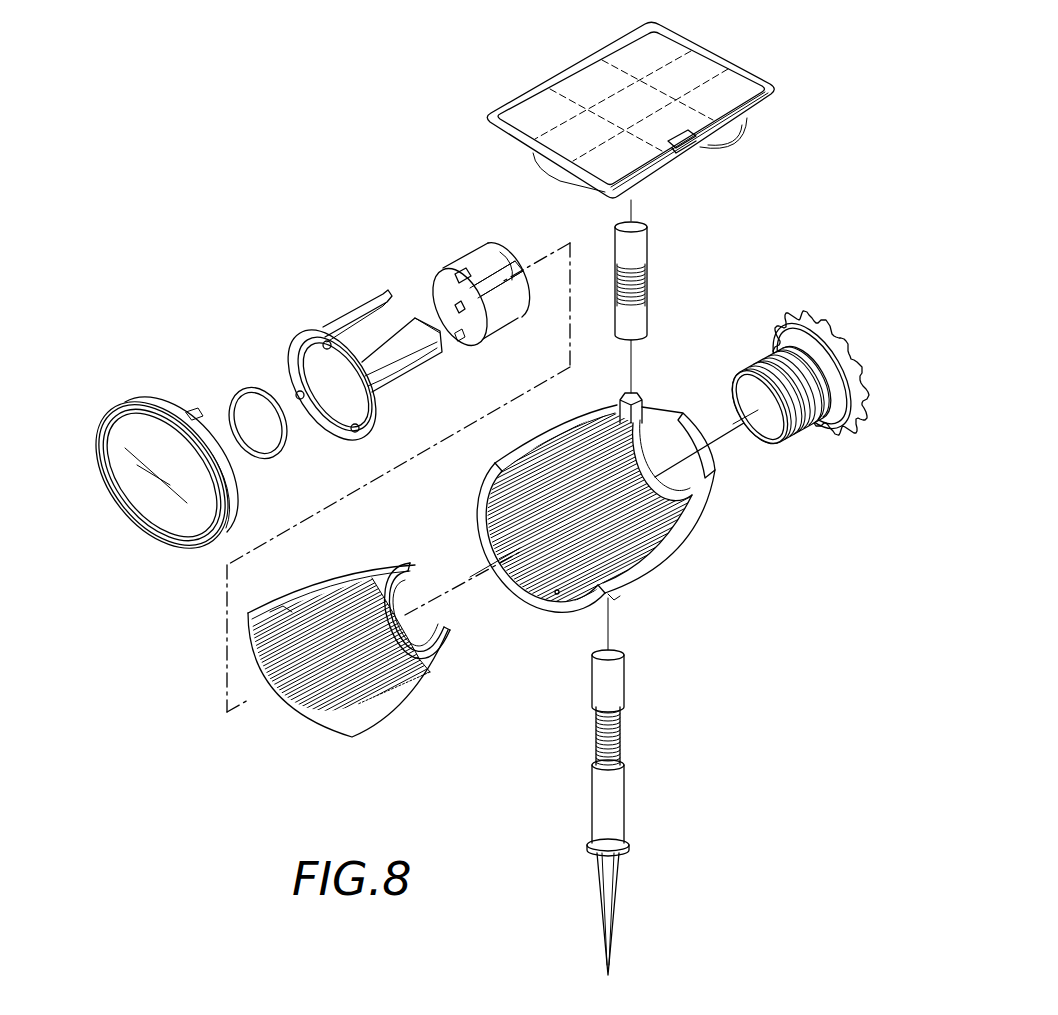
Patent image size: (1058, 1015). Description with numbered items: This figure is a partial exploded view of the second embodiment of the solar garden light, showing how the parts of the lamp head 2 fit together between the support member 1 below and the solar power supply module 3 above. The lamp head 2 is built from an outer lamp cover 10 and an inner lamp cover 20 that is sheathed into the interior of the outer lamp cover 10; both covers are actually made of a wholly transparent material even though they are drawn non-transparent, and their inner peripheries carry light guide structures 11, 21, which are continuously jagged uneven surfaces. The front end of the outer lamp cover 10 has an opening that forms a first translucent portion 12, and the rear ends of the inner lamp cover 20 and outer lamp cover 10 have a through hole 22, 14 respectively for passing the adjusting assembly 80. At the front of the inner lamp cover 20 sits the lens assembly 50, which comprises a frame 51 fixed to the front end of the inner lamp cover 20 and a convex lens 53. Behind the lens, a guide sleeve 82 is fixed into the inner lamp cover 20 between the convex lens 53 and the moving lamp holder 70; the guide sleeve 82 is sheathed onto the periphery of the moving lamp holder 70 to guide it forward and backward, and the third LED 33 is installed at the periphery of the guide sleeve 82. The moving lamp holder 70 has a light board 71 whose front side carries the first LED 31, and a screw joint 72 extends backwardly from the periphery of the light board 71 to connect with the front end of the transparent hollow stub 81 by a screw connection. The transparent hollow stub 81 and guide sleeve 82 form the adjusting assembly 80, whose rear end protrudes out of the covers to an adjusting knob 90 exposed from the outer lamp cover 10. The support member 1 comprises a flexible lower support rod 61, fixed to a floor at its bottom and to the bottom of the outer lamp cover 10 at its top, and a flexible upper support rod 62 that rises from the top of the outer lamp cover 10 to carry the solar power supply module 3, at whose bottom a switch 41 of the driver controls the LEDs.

The support member 1 is at (644, 812).
The lamp head 2 is at (479, 577).
The solar power supply module 3 is at (634, 114).
The outer lamp cover 10 is at (573, 511).
The light guide structure 11 is at (518, 556).
The first translucent portion 12 is at (483, 484).
The through hole 14 is at (660, 468).
The inner lamp cover 20 is at (340, 664).
The light guide structure 21 is at (310, 720).
The through hole 22 is at (410, 630).
The first LED 31 is at (458, 316).
The third LED 33 is at (385, 296).
The switch 41 is at (697, 152).
The lens assembly 50 is at (162, 471).
The frame 51 is at (200, 558).
The convex lens 53 is at (238, 385).
The flexible lower support rod 61 is at (625, 727).
The flexible upper support rod 62 is at (652, 283).
The moving lamp holder 70 is at (457, 289).
The light board 71 is at (437, 285).
The screw joint 72 is at (500, 270).
The adjusting assembly 80 is at (793, 389).
The transparent hollow stub 81 is at (765, 372).
The guide sleeve 82 is at (354, 354).
The adjusting knob 90 is at (832, 335).